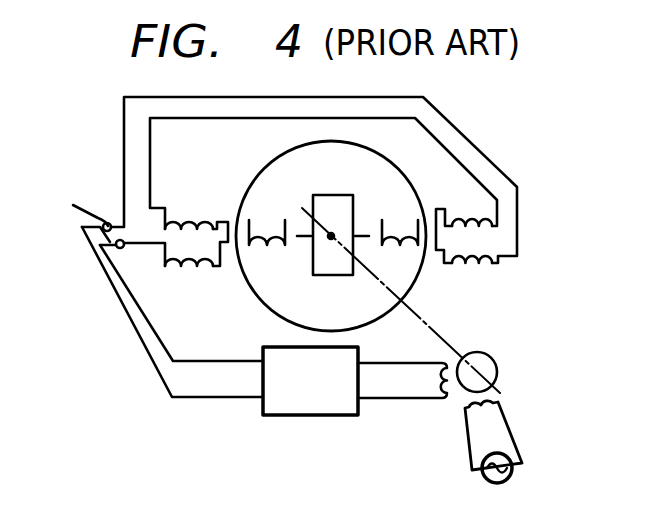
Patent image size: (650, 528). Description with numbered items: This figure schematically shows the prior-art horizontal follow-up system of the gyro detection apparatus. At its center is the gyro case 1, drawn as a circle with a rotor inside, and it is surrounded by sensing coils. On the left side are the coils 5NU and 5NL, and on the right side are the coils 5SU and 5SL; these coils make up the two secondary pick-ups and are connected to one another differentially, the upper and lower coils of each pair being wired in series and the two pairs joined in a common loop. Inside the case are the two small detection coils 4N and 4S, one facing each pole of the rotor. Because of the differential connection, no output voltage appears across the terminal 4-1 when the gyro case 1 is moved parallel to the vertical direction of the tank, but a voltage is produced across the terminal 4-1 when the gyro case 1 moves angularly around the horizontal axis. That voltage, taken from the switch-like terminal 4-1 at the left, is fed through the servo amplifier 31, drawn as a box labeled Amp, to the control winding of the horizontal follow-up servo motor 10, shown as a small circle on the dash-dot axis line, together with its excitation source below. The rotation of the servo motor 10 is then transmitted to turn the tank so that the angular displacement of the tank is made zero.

The terminal 4-1 is at (86, 207).
The coil 5NU is at (183, 213).
The coil 5NL is at (186, 268).
The coil 5SU is at (468, 213).
The coil 5SL is at (470, 265).
The gyro case 1 is at (257, 298).
The N-pole detection coil 4N is at (262, 228).
The S-pole detection coil 4S is at (389, 230).
The servo amplifier 31 is at (346, 417).
The horizontal follow-up servo motor 10 is at (498, 364).